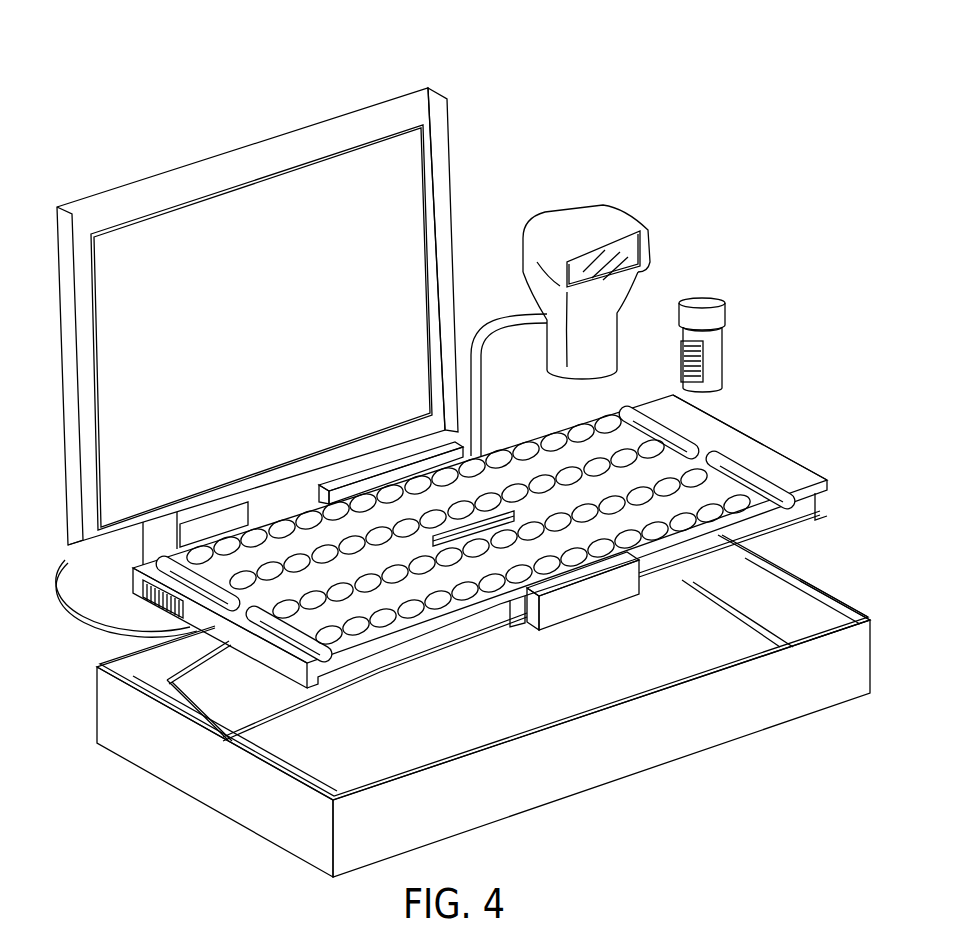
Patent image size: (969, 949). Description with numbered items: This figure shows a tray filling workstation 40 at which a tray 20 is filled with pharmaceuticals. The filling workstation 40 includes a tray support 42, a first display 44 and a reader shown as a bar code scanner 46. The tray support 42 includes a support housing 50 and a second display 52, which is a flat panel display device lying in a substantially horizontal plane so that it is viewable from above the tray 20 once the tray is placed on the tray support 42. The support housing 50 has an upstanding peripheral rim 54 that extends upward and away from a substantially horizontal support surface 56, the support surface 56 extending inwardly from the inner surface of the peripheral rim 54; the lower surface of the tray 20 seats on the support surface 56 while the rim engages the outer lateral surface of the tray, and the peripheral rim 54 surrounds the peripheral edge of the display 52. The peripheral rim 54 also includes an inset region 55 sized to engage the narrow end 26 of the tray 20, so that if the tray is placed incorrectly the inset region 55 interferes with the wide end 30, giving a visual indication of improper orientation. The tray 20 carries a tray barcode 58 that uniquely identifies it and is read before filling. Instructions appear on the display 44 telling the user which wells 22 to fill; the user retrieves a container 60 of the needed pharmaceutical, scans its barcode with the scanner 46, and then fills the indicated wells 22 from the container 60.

The tray 20 is at (435, 561).
The well 22 is at (593, 425).
The narrow end 26 is at (780, 465).
The wide end 30 is at (270, 662).
The tray filling workstation 40 is at (622, 126).
The tray support 42 is at (483, 702).
The first display 44 is at (321, 127).
The bar code scanner 46 is at (582, 217).
The support housing 50 is at (807, 603).
The second display 52 is at (547, 710).
The peripheral rim 54 is at (862, 616).
The inset region 55 is at (820, 612).
The support surface 56 is at (824, 636).
The tray barcode 58 is at (140, 592).
The container 60 is at (715, 353).